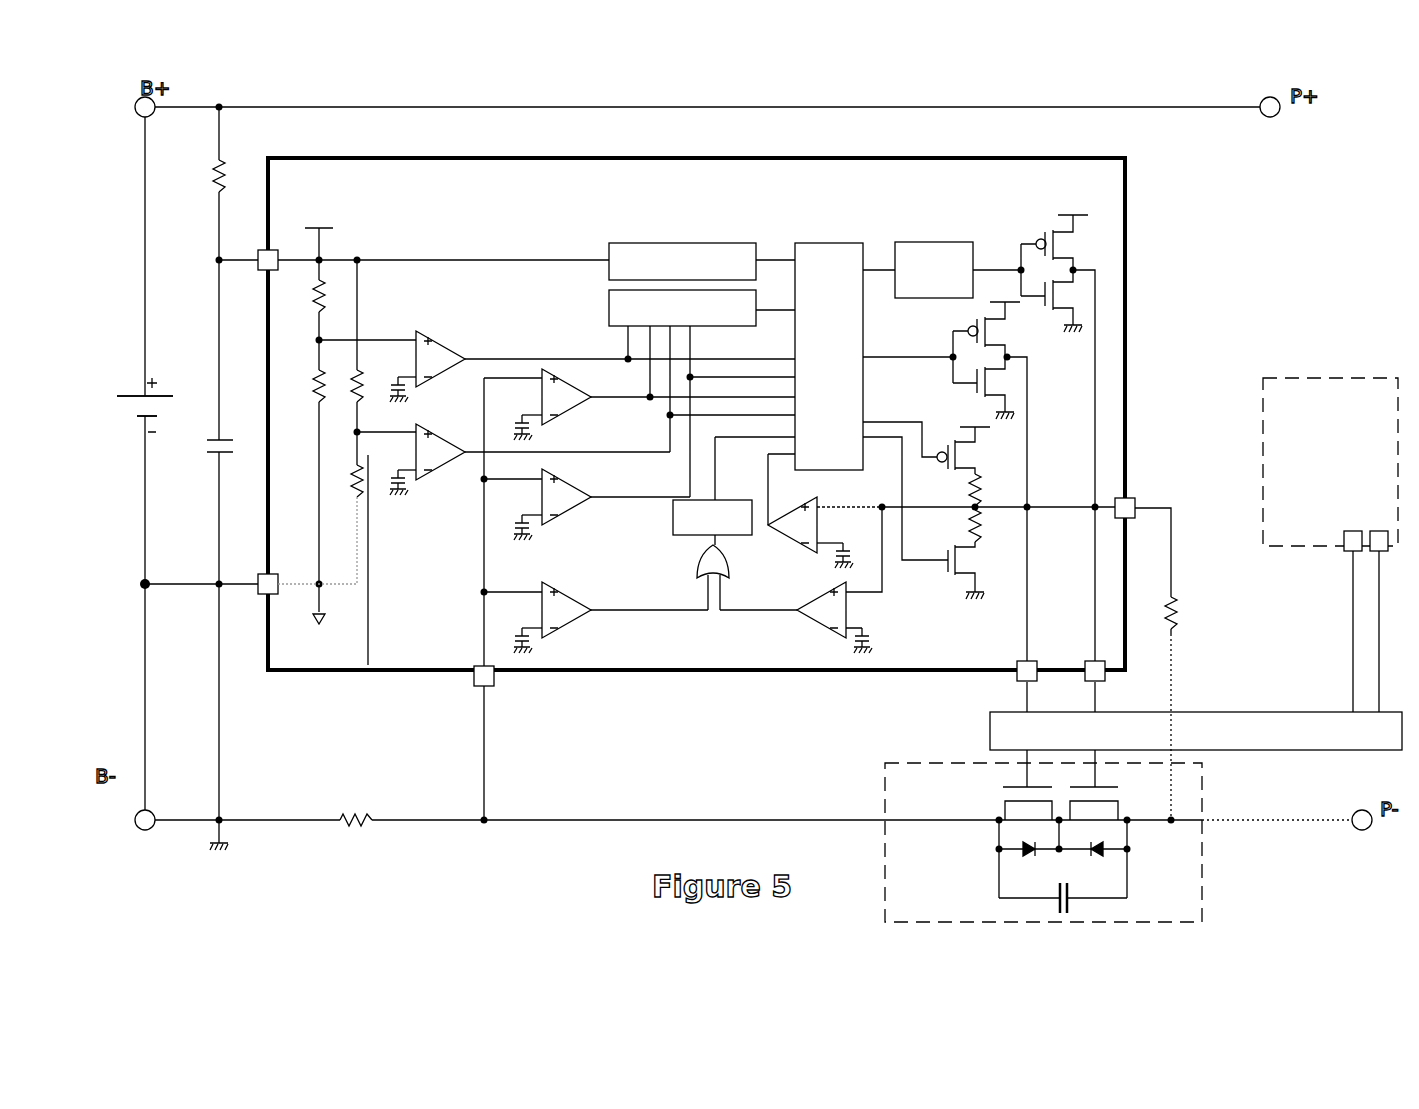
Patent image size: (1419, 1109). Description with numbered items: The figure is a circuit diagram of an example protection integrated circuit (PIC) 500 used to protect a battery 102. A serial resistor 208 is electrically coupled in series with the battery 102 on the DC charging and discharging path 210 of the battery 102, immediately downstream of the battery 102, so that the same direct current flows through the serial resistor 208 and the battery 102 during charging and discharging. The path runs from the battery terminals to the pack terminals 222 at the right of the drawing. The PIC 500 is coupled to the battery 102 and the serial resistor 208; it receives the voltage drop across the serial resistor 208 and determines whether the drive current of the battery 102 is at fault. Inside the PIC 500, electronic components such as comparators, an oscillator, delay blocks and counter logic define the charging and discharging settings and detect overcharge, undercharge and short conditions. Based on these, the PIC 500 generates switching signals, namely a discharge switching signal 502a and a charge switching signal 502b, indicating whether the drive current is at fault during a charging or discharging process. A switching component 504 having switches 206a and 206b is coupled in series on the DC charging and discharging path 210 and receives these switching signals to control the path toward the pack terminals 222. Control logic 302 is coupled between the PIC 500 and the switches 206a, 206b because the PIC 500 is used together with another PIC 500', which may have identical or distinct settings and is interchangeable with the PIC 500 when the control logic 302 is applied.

The battery 102 is at (125, 414).
The serial resistor 208 is at (336, 805).
The DC charging and discharging path 210 is at (178, 823).
The pack terminals P+ / P- 222 is at (1278, 114).
The protection integrated circuit 500 is at (727, 489).
The another PIC 500' is at (1330, 545).
The discharge switching signal 502a is at (1032, 660).
The charge switching signal 502b is at (1106, 664).
The control logic 302 is at (1196, 731).
The switching component 504 is at (1043, 836).
The switch 206a is at (1016, 815).
The switch 206b is at (1110, 815).